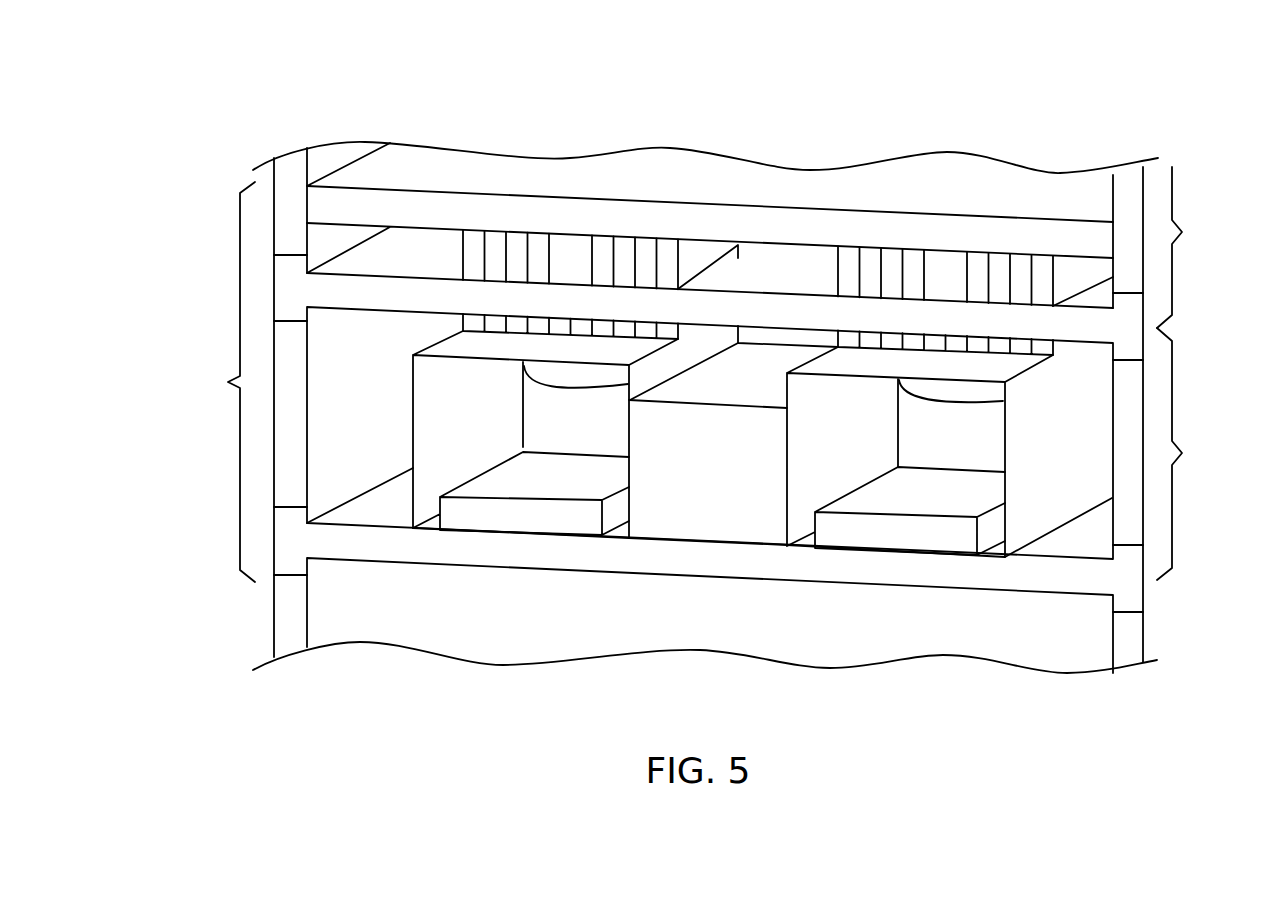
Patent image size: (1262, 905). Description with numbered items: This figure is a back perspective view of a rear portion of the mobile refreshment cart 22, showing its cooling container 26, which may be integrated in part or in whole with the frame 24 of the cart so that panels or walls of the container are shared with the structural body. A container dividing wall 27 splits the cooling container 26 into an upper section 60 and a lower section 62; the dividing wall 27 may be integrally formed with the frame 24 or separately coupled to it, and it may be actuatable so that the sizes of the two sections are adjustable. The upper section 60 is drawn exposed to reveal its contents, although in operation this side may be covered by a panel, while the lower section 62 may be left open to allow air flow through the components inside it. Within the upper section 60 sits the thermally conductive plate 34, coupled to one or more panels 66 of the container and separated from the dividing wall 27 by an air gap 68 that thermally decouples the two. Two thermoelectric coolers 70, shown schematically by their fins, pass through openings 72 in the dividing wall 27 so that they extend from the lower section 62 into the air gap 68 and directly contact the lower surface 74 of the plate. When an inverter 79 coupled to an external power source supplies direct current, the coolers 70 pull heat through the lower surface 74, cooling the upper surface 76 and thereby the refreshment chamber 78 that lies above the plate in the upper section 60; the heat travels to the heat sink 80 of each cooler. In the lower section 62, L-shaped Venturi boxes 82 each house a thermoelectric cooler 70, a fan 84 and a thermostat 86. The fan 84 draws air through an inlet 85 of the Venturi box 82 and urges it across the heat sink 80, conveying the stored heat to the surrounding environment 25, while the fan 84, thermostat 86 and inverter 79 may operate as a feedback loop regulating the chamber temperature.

The mobile refreshment cart 22 is at (224, 184).
The frame 24 is at (285, 615).
The surrounding environment 25 is at (200, 278).
The cooling container 26 is at (225, 382).
The container dividing wall 27 is at (358, 303).
The thermally conductive plate 34 is at (528, 202).
The upper section 60 is at (1186, 247).
The lower section 62 is at (763, 443).
The panels 66 is at (332, 153).
The air gap 68 is at (448, 242).
The thermoelectric coolers 70 is at (668, 265).
The openings 72 is at (724, 263).
The lower surface 74 is at (350, 225).
The upper surface 76 is at (357, 185).
The refreshment chamber 78 is at (604, 176).
The inverter 79 is at (706, 530).
The heat sink 80 is at (679, 334).
The Venturi boxes 82 is at (708, 350).
The fan 84 is at (575, 389).
The inlet 85 is at (412, 440).
The thermostat 86 is at (500, 478).